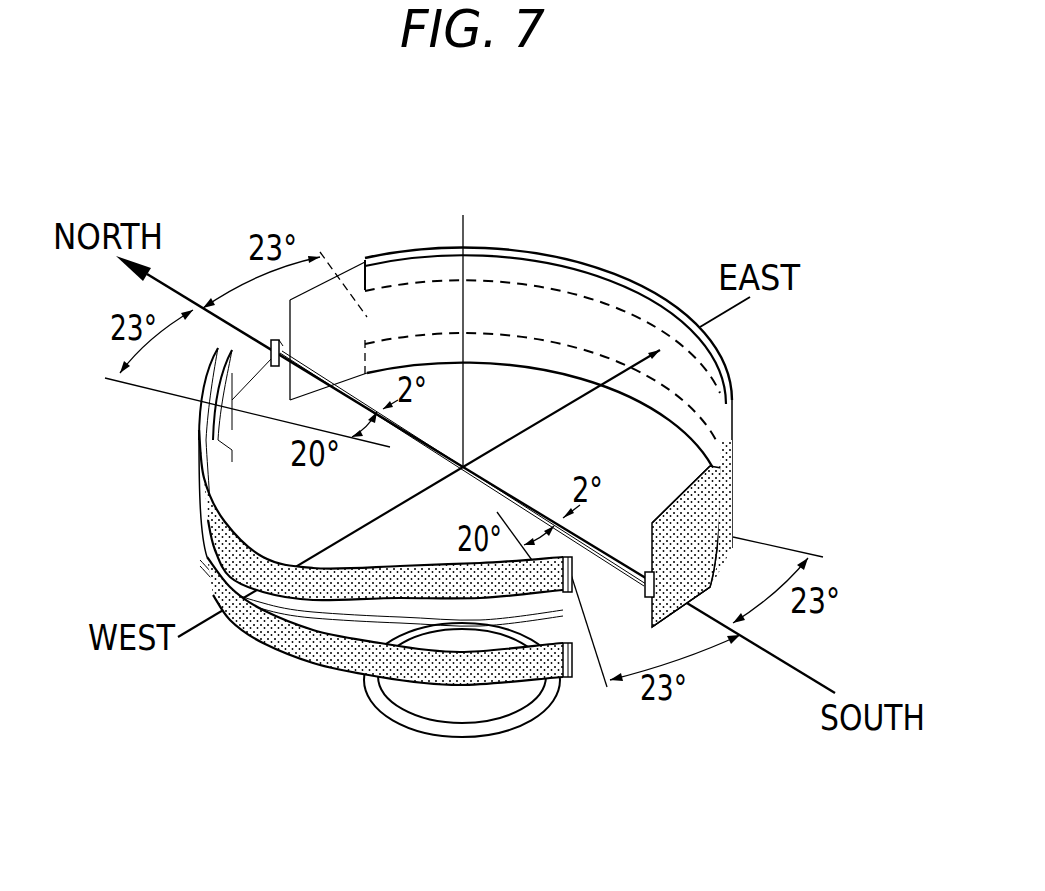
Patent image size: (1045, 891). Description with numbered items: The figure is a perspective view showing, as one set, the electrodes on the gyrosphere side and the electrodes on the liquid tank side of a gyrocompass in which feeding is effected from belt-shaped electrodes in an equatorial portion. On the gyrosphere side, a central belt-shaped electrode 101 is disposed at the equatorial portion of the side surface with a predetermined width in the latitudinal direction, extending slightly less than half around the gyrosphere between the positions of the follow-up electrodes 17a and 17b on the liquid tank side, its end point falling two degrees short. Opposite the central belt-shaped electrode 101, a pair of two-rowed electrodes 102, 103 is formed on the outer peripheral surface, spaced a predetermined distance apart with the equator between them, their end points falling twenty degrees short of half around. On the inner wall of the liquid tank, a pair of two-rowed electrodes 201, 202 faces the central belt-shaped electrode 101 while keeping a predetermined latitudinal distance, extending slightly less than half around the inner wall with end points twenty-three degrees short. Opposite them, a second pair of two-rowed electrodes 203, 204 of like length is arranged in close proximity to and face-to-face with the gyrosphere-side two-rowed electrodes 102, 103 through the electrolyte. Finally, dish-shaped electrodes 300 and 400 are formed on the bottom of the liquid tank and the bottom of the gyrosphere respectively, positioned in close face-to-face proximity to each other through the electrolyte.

The follow-up electrode 17a is at (272, 352).
The follow-up electrode 17b is at (650, 580).
The central belt-shaped electrode 101 is at (693, 563).
The two-rowed electrode 102 is at (580, 560).
The two-rowed electrode 103 is at (577, 655).
The two-rowed electrode 201 is at (730, 455).
The two-rowed electrode 202 is at (728, 557).
The two-rowed electrode 203 is at (305, 572).
The two-rowed electrode 204 is at (332, 663).
The dish-shaped electrode 300 is at (470, 707).
The dish-shaped electrode 400 is at (520, 727).